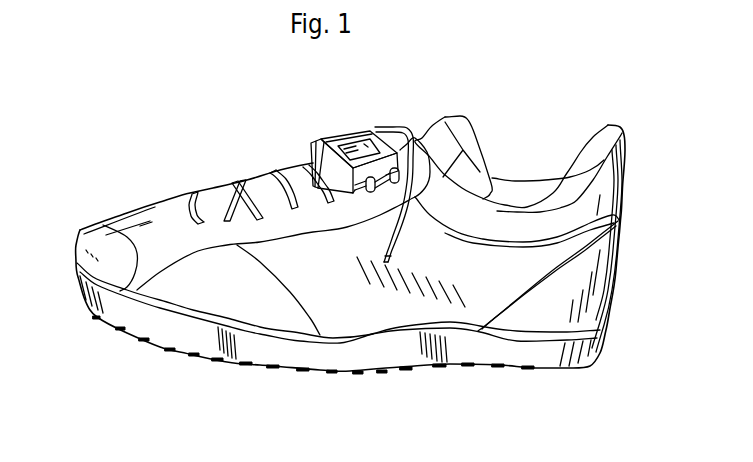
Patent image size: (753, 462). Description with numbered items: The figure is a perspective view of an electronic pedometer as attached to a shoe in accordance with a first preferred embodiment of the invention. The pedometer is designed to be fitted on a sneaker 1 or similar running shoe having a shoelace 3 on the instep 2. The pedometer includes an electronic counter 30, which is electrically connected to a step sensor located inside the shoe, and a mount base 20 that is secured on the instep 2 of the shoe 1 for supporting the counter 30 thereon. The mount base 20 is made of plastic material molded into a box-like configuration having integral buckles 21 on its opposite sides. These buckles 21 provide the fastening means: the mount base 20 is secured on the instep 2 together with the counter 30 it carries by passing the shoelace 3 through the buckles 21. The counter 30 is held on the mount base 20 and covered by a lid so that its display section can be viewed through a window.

The sneaker 1 is at (374, 246).
The instep 2 is at (278, 212).
The shoelace 3 is at (275, 173).
The mount base 20 is at (344, 246).
The buckles 21 is at (358, 192).
The electronic counter 30 is at (358, 129).